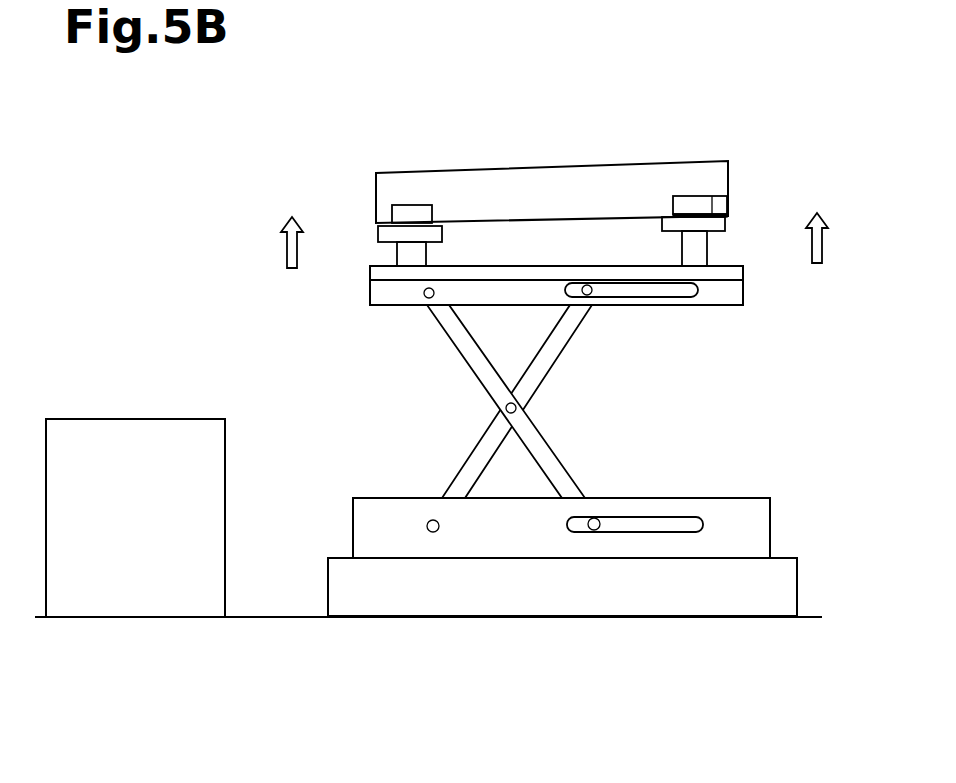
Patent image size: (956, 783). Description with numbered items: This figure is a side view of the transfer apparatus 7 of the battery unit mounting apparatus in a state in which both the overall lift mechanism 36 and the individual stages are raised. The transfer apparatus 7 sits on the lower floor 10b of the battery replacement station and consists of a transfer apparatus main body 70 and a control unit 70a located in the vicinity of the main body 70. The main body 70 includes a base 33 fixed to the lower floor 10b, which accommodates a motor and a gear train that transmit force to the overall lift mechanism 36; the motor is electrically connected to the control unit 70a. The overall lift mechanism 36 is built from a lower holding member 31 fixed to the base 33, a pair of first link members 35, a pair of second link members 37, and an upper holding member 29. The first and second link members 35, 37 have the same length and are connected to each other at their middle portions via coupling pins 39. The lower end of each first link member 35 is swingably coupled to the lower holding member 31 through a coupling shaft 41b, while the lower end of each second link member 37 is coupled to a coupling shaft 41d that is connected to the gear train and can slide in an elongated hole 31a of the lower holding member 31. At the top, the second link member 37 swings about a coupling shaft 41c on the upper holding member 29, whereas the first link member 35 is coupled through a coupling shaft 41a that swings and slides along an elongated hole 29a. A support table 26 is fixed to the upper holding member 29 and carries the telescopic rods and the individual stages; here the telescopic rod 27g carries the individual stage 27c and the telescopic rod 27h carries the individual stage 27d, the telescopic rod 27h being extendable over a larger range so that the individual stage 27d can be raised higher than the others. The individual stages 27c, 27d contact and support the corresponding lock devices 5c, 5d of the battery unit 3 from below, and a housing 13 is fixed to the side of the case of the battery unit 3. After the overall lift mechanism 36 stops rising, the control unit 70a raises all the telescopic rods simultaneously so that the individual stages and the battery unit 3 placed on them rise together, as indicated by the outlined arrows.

The battery unit 3 is at (553, 183).
The lock device 5c is at (414, 200).
The lock device 5d is at (688, 190).
The transfer apparatus 7 is at (187, 242).
The lower floor 10b is at (800, 658).
The housing 13 is at (392, 210).
The support table 26 is at (728, 273).
The individual stage 27c is at (395, 236).
The individual stage 27d is at (707, 226).
The telescopic rod 27g is at (417, 260).
The telescopic rod 27h is at (693, 250).
The upper holding member 29 is at (381, 297).
The elongated hole 29a is at (672, 291).
The lower holding member 31 is at (769, 528).
The elongated hole 31a is at (648, 517).
The base 33 is at (798, 590).
The first link member 35 is at (540, 368).
The overall lift mechanism 36 is at (578, 401).
The second link member 37 is at (548, 463).
The coupling pin 39 is at (517, 407).
The coupling shaft 41a is at (592, 297).
The coupling shaft 41b is at (433, 532).
The coupling shaft 41c is at (430, 305).
The coupling shaft 41d is at (594, 530).
The transfer apparatus main body 70 is at (374, 412).
The control unit 70a is at (123, 437).